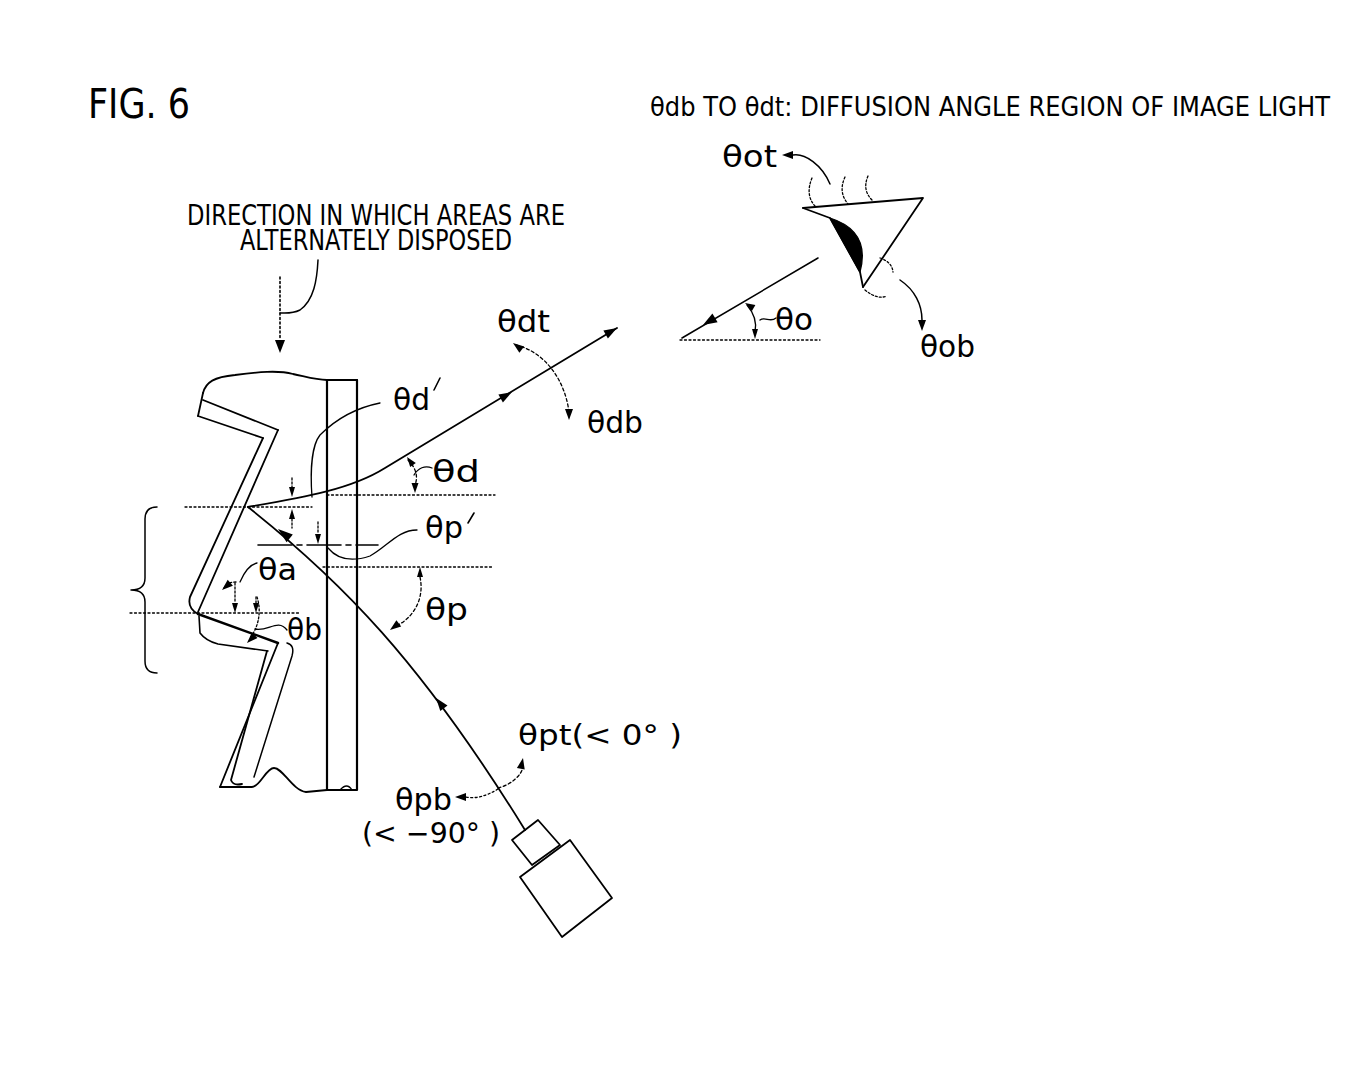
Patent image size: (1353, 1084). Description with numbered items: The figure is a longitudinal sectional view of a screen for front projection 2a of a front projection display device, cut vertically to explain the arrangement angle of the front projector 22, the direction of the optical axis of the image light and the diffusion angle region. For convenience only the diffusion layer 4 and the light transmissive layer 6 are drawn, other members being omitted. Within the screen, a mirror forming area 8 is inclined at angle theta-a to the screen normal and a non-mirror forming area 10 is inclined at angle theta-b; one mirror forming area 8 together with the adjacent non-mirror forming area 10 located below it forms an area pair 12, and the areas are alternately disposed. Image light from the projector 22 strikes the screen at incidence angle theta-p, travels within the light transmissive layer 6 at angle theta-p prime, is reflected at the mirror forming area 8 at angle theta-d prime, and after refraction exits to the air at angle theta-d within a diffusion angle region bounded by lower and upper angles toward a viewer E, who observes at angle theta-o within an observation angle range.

The screen for front projection 2a is at (340, 364).
The diffusion layer 4 is at (337, 773).
The light transmissive layer 6 is at (243, 628).
The mirror forming area 8 is at (215, 548).
The non-mirror forming area 10 is at (232, 428).
The area pair 12 is at (125, 590).
The front projector 22 is at (585, 880).
The viewer E is at (880, 222).